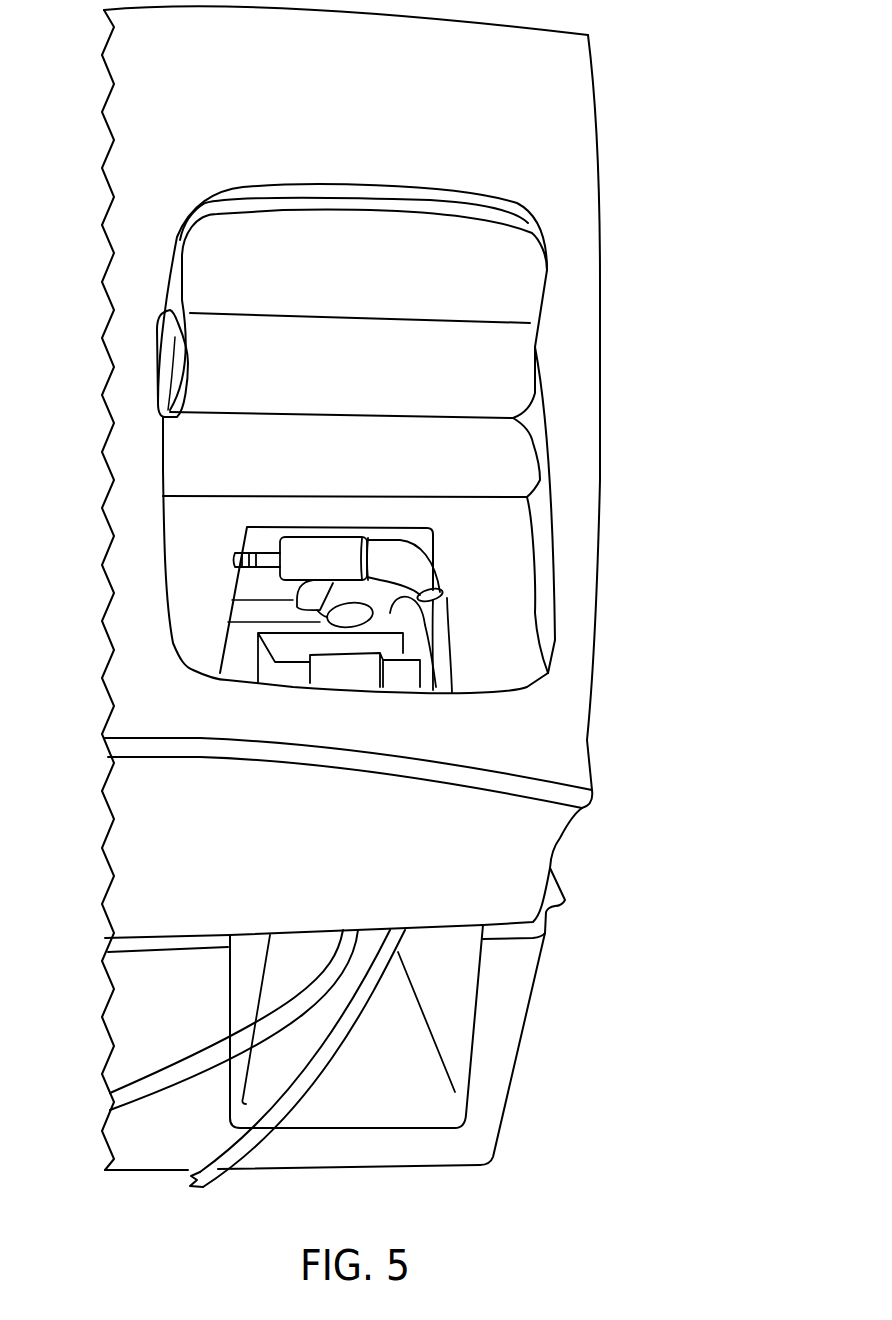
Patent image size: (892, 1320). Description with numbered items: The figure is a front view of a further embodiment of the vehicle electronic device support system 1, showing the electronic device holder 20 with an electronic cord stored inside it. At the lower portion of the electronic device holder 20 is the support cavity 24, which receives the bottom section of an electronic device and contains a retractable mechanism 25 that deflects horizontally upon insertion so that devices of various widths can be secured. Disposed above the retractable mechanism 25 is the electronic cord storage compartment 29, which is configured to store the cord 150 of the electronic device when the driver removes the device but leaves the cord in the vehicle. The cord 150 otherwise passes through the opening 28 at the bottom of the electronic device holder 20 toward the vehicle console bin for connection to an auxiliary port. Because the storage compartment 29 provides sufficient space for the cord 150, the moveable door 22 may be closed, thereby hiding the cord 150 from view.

The vehicle electronic device support system 1 is at (650, 255).
The electronic device holder 20 is at (566, 496).
The moveable door 22 is at (528, 222).
The support cavity 24 is at (506, 664).
The retractable mechanism 25 is at (407, 672).
The opening 28 is at (462, 1020).
The electronic cord storage compartment 29 is at (247, 580).
The cord 150 is at (352, 1052).